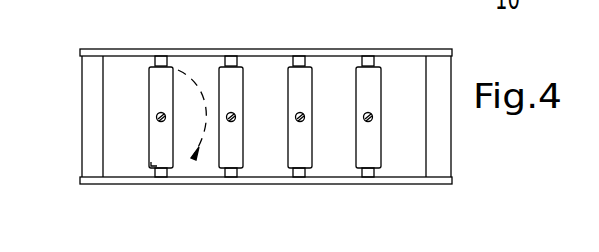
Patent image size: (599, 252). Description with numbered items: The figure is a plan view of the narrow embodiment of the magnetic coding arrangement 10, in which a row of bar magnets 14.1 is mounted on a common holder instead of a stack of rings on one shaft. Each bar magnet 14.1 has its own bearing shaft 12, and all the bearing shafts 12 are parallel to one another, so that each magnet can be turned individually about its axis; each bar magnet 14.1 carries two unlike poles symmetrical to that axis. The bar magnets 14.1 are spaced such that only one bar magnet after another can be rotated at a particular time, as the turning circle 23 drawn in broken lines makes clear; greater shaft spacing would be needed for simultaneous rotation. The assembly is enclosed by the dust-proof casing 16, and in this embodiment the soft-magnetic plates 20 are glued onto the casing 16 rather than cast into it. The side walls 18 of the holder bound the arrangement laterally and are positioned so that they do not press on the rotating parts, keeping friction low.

The magnetic coding arrangement 10 is at (273, 127).
The bearing shaft 12 is at (373, 121).
The bar magnet 14.1 is at (150, 166).
The dust-proof casing 16 is at (283, 49).
The side wall 18 is at (93, 148).
The soft-magnetic plate 20 is at (366, 57).
The turning circle 23 is at (186, 72).